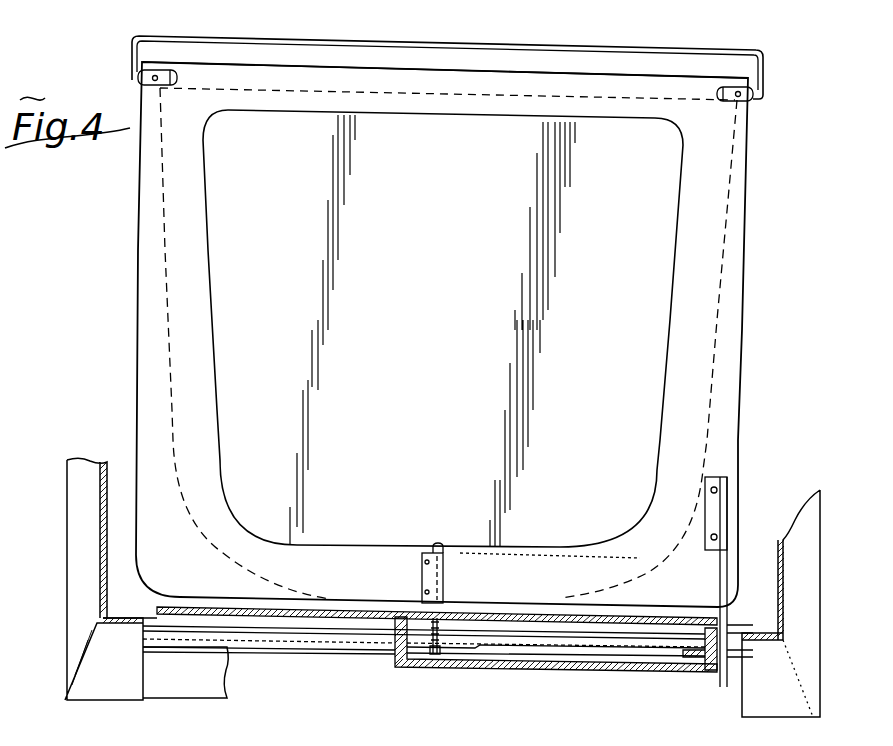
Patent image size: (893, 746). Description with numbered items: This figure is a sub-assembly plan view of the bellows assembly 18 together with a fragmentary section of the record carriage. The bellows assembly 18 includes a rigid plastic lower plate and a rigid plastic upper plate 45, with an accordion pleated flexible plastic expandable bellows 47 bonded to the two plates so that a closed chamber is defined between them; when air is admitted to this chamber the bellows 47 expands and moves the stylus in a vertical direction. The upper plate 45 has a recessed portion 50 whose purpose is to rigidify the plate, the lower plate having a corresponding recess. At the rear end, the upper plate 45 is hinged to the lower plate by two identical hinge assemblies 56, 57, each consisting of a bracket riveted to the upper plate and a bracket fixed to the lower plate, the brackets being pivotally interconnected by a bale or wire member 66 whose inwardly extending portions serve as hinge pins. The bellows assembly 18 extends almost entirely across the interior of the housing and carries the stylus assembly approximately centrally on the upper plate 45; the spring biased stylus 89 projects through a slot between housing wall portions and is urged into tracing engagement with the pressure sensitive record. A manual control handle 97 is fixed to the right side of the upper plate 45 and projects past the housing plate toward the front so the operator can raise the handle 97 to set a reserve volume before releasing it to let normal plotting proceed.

The bellows assembly 18 is at (453, 334).
The upper plate 45 is at (150, 378).
The bellows 47 is at (167, 320).
The recessed portion 50 is at (660, 418).
The hinge assembly 56 is at (130, 74).
The hinge assembly 57 is at (757, 107).
The bale or wire member 66 is at (436, 44).
The stylus 89 is at (447, 637).
The manual control handle 97 is at (730, 602).